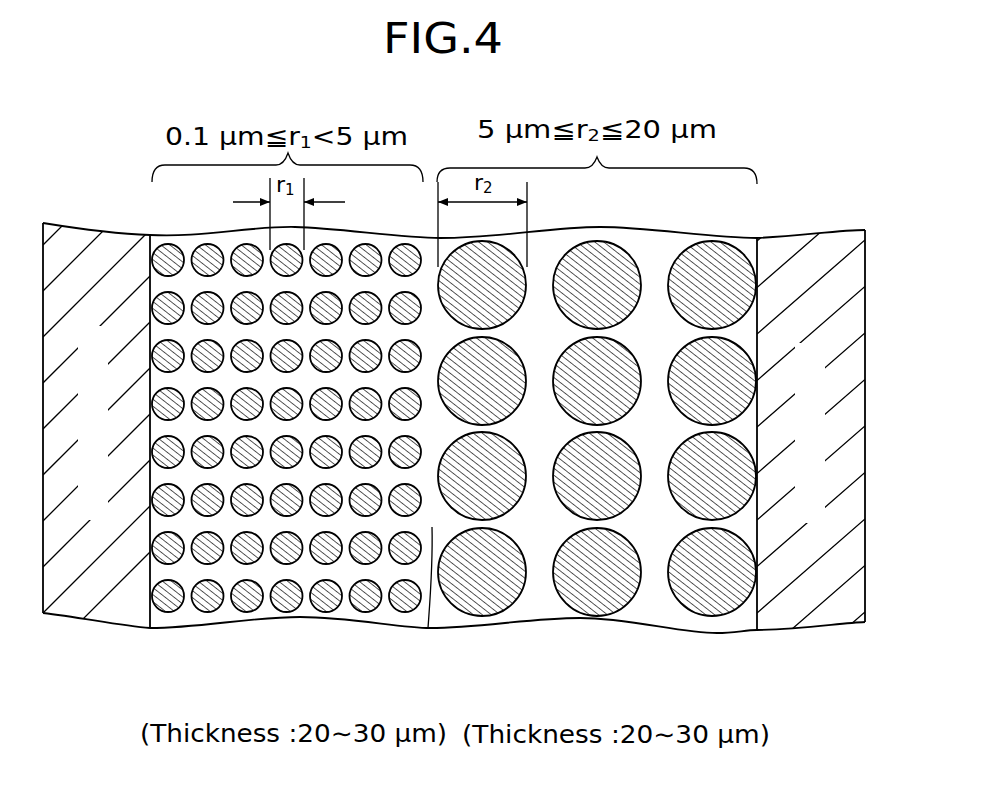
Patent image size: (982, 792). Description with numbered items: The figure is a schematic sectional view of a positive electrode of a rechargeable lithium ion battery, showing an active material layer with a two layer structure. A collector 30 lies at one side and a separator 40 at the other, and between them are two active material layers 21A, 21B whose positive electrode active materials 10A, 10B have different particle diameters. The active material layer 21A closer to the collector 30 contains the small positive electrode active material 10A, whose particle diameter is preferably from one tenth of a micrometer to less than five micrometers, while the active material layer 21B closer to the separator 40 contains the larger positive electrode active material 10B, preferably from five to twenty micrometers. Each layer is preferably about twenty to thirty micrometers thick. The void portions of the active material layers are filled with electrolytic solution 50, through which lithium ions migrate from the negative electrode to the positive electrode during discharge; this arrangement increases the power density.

The collector 30 is at (102, 242).
The separator 40 is at (810, 262).
The positive electrode active material 10A is at (308, 250).
The positive electrode active material 10B is at (613, 247).
The active material layer 21A is at (452, 708).
The active material layer 21B is at (752, 710).
The electrolytic solution 50 is at (428, 628).